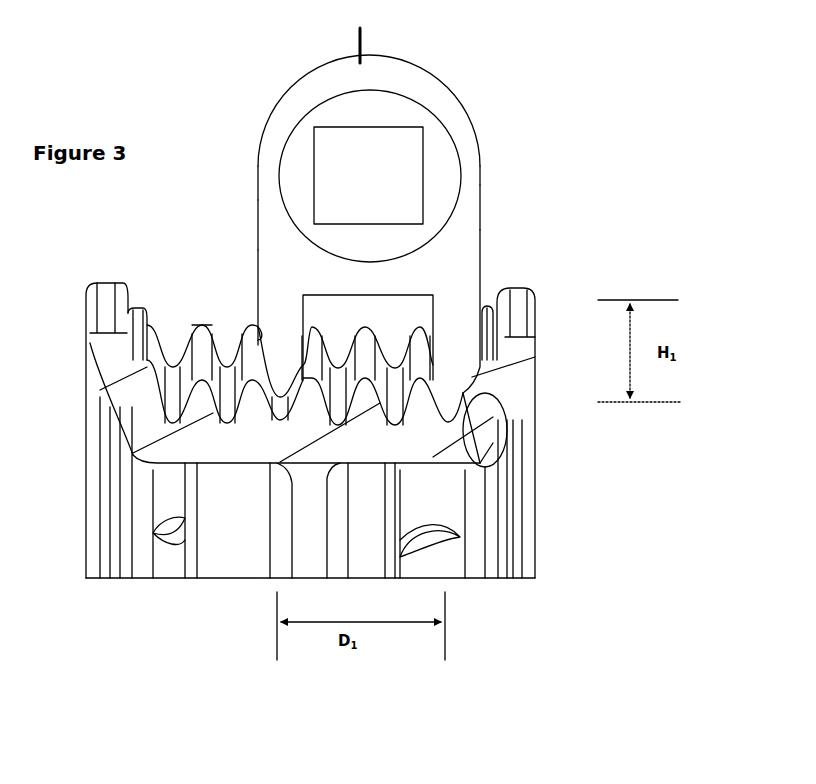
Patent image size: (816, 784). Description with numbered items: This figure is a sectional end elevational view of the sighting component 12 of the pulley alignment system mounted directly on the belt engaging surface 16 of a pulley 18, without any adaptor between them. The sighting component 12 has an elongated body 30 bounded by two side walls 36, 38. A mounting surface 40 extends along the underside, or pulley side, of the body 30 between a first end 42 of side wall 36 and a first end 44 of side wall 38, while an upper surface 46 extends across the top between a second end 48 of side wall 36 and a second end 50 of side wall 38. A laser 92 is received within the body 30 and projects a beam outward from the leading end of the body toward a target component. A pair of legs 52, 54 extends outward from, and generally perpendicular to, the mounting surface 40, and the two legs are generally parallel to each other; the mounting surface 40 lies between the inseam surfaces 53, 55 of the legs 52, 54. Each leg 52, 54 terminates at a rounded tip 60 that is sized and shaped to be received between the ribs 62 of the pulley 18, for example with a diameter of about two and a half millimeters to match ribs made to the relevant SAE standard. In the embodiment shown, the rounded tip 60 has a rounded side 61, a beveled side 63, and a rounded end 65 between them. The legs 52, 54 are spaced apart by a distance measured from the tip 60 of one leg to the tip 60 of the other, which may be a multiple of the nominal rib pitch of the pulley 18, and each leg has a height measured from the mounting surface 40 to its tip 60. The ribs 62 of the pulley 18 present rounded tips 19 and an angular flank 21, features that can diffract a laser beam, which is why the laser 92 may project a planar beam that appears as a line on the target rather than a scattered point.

The sighting component 12 is at (493, 78).
The skirt 16 is at (138, 402).
The pulley 18 is at (537, 457).
The rounded tips 19 is at (203, 323).
The angular flank 21 is at (183, 352).
The elongated body 30 is at (290, 97).
The side wall 36 is at (482, 203).
The side wall 38 is at (259, 220).
The mounting surface 40 is at (378, 303).
The first end of side wall 42 is at (481, 258).
The first end of side wall 44 is at (259, 283).
The upper surface 46 is at (360, 36).
The second end of side wall 48 is at (482, 157).
The second end of side wall 50 is at (259, 152).
The leg 52 is at (523, 283).
The inseam surface 53 is at (427, 305).
The leg 54 is at (278, 340).
The inseam surface 55 is at (372, 327).
The rounded tip 60 is at (280, 423).
The rounded side 61 is at (427, 403).
The ribs 62 is at (380, 420).
The beveled side 63 is at (520, 368).
The rounded end 65 is at (500, 427).
The laser 92 is at (351, 188).